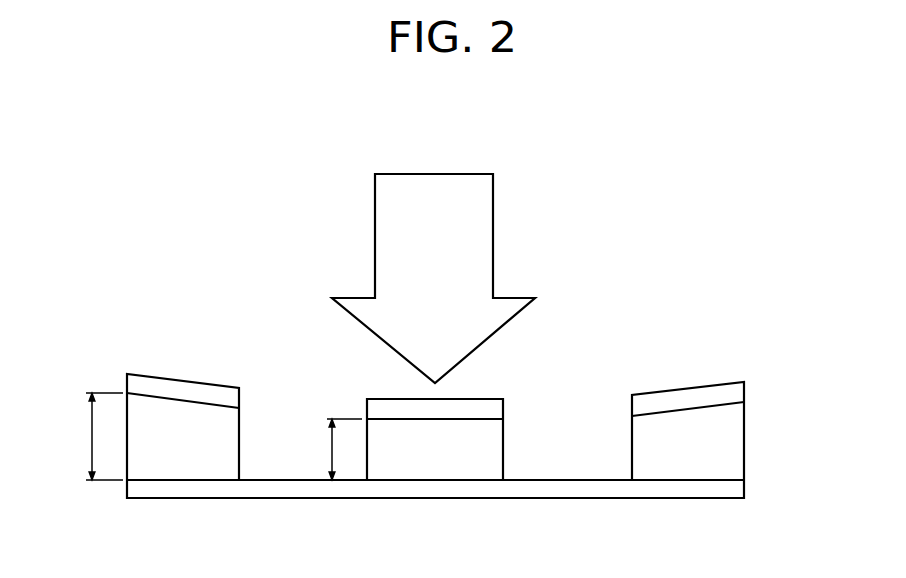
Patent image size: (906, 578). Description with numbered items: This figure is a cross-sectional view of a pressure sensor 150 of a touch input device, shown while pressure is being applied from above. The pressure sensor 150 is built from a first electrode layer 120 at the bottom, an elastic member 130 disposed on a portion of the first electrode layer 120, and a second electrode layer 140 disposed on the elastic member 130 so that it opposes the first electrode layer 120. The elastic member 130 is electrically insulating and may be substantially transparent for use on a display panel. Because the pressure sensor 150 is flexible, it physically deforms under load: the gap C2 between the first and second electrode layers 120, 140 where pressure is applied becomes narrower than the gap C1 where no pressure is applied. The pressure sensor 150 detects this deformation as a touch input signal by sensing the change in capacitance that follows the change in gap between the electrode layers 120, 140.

The first electrode layer 120 is at (483, 490).
The elastic member 130 is at (436, 460).
The second electrode layer 140 is at (390, 413).
The pressure sensor 150 is at (411, 119).
The gap C1 is at (94, 436).
The gap C2 is at (334, 449).